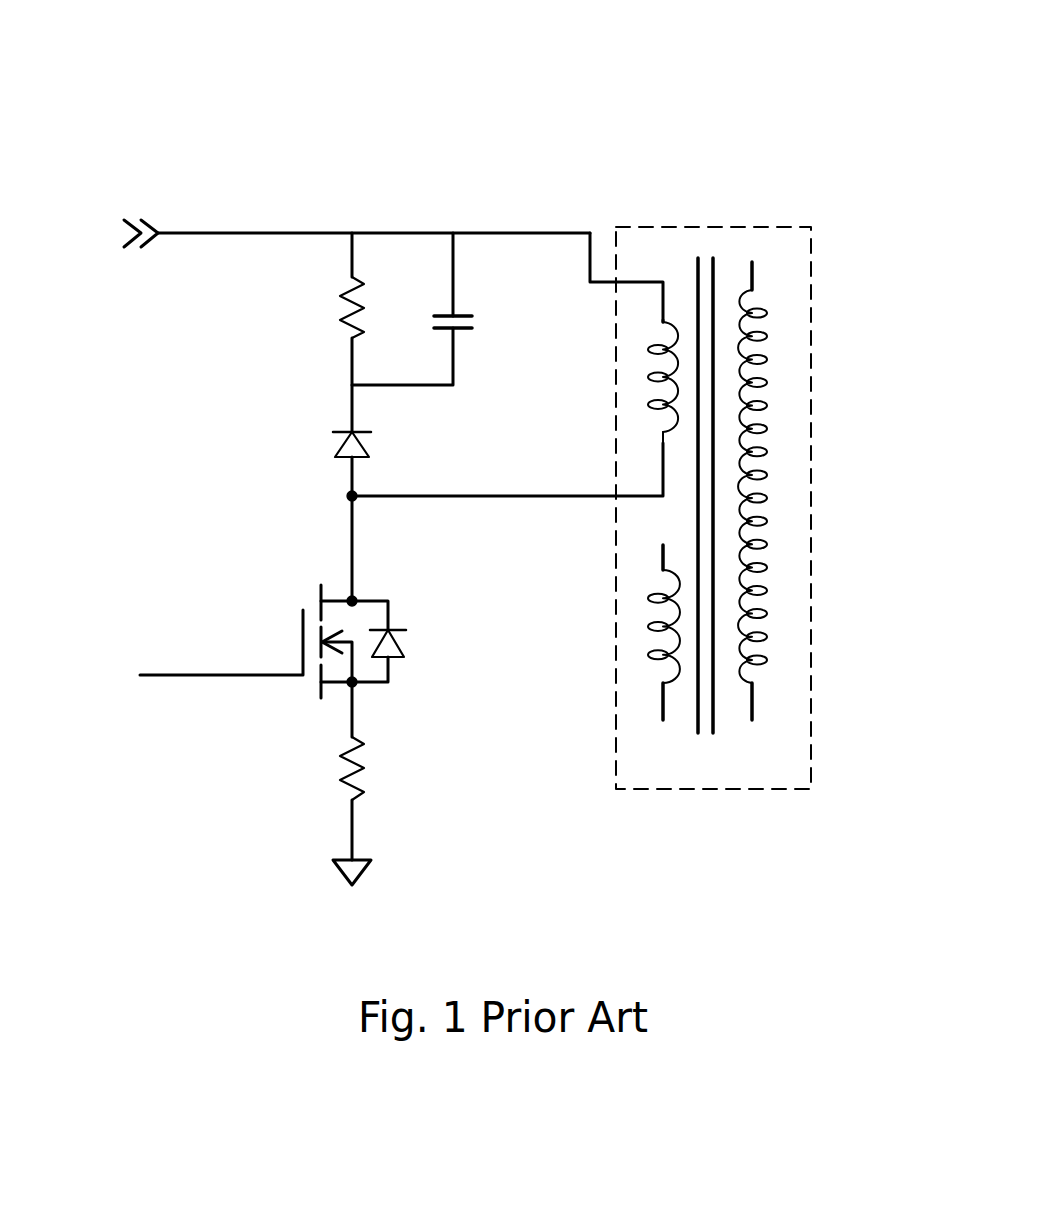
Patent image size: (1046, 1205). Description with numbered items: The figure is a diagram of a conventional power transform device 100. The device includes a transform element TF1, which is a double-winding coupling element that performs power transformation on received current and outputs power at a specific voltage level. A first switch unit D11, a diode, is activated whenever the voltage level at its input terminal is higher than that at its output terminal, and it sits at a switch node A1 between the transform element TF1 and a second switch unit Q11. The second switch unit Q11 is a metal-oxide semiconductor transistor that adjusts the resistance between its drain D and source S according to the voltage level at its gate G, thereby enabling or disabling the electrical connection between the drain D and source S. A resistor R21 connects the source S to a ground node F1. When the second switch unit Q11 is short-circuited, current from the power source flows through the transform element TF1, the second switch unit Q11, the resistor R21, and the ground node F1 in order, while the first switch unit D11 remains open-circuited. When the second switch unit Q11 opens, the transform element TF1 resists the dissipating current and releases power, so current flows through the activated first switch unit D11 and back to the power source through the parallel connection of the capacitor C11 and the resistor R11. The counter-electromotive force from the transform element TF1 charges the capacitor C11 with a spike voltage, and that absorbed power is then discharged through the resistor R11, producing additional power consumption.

The power transform device 100 is at (760, 118).
The resistor R11 is at (329, 309).
The capacitor C11 is at (477, 328).
The first switch unit D11 is at (375, 452).
The switch node A1 is at (484, 476).
The second switch unit Q11 is at (297, 645).
The gate G is at (221, 642).
The drain D is at (354, 591).
The source S is at (354, 697).
The resistor R21 is at (329, 798).
The ground node F1 is at (368, 881).
The transform element TF1 is at (744, 227).